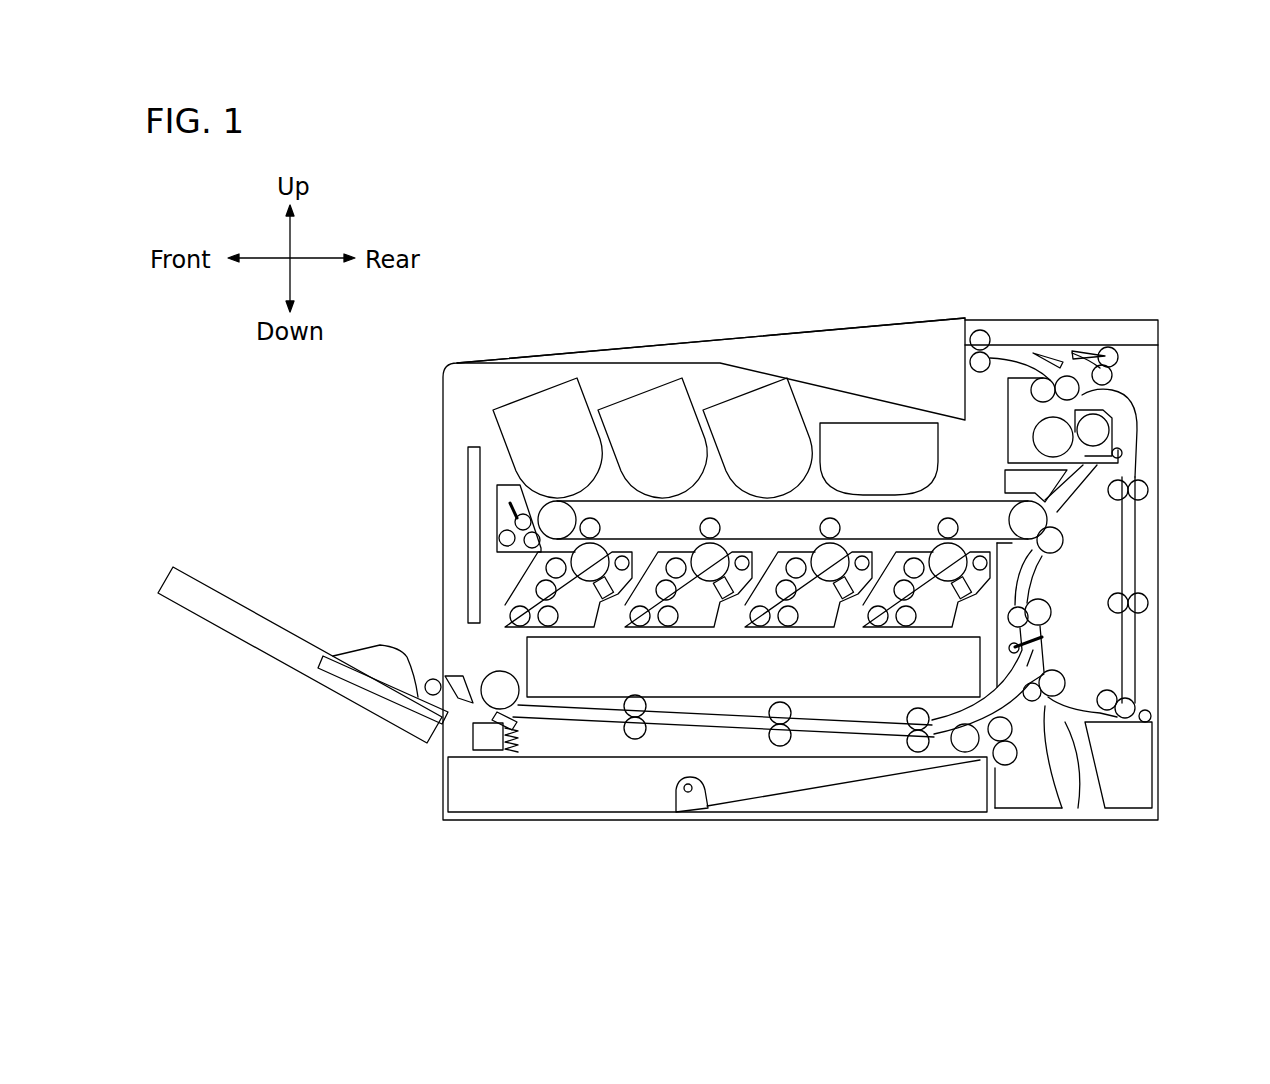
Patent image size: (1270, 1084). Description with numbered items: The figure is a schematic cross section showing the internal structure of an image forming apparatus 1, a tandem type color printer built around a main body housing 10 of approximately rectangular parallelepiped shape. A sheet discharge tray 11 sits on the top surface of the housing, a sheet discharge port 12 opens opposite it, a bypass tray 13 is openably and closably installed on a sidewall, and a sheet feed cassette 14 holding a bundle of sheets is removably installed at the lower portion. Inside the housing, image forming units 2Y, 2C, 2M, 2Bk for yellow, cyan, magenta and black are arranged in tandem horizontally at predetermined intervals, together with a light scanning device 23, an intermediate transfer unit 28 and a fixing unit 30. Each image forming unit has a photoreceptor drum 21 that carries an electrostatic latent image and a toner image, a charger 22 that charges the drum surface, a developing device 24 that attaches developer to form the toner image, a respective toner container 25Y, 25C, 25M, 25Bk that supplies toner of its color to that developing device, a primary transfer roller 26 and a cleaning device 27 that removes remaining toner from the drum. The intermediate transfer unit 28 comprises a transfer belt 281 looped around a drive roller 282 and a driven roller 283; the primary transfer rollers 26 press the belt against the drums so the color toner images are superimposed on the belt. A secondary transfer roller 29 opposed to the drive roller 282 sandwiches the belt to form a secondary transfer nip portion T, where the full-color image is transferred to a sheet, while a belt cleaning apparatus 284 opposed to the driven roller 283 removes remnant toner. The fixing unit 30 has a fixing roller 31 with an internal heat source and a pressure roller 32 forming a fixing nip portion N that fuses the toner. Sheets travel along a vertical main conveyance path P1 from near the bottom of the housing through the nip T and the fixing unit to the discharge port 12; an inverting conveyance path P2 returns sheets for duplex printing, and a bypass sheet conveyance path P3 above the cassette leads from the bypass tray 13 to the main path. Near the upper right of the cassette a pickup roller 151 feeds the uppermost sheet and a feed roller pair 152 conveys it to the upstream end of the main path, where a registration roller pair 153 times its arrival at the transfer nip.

The image forming apparatus 1 is at (1108, 280).
The main body housing 10 is at (442, 395).
The sheet discharge tray 11 is at (812, 400).
The sheet discharge port 12 is at (965, 348).
The bypass tray 13 is at (213, 590).
The sheet feed cassette 14 is at (676, 765).
The image forming unit 2Y is at (581, 619).
The image forming unit 2C is at (702, 596).
The image forming unit 2M is at (822, 590).
The image forming unit 2Bk is at (940, 592).
The photoreceptor drum 21 is at (592, 573).
The charger 22 is at (583, 590).
The light scanning device 23 is at (540, 657).
The developing device 24 is at (527, 588).
The toner container 25Y is at (538, 405).
The toner container 25C is at (643, 407).
The toner container 25M is at (746, 410).
The toner container 25Bk is at (882, 440).
The primary transfer roller 26 is at (594, 525).
The cleaning device 27 is at (643, 553).
The intermediate transfer unit 28 is at (967, 492).
The transfer belt 281 is at (763, 600).
The drive roller 282 is at (1037, 520).
The driven roller 283 is at (552, 516).
The belt cleaning apparatus 284 is at (495, 517).
The secondary transfer roller 29 is at (1057, 543).
The fixing unit 30 is at (1119, 412).
The fixing roller 31 is at (1063, 448).
The pressure roller 32 is at (1100, 430).
The pickup roller 151 is at (963, 747).
The feed roller pair 152 is at (1003, 755).
The registration roller pair 153 is at (1043, 615).
The fixing nip portion N is at (1105, 400).
The secondary transfer nip portion T is at (1062, 522).
The main conveyance path P1 is at (1020, 583).
The inverting conveyance path P2 is at (1132, 550).
The bypass sheet conveyance path P3 is at (673, 718).